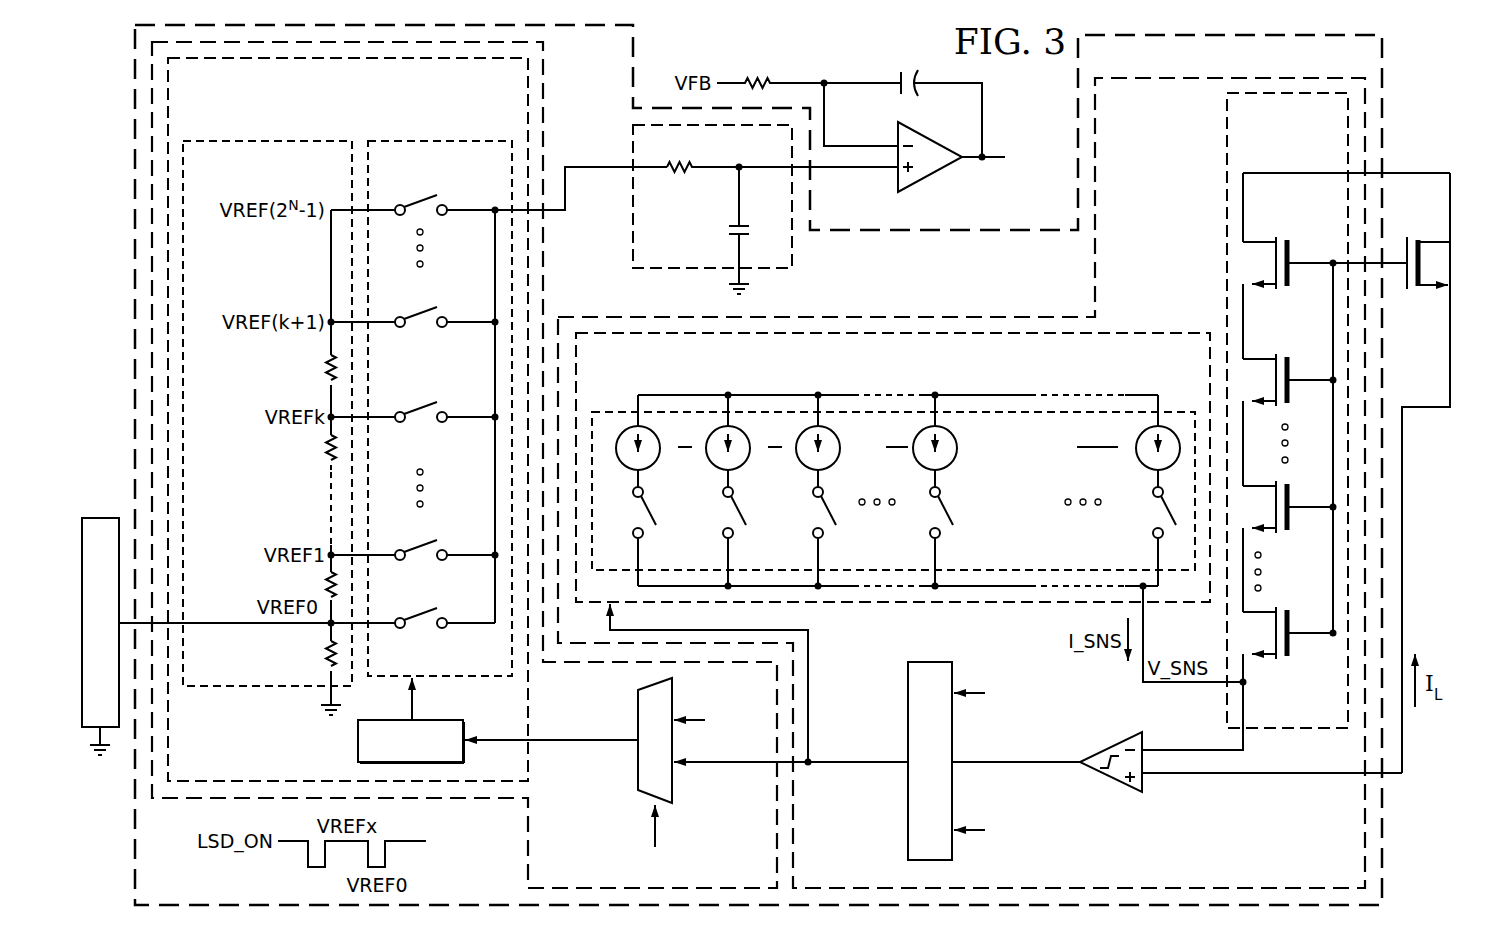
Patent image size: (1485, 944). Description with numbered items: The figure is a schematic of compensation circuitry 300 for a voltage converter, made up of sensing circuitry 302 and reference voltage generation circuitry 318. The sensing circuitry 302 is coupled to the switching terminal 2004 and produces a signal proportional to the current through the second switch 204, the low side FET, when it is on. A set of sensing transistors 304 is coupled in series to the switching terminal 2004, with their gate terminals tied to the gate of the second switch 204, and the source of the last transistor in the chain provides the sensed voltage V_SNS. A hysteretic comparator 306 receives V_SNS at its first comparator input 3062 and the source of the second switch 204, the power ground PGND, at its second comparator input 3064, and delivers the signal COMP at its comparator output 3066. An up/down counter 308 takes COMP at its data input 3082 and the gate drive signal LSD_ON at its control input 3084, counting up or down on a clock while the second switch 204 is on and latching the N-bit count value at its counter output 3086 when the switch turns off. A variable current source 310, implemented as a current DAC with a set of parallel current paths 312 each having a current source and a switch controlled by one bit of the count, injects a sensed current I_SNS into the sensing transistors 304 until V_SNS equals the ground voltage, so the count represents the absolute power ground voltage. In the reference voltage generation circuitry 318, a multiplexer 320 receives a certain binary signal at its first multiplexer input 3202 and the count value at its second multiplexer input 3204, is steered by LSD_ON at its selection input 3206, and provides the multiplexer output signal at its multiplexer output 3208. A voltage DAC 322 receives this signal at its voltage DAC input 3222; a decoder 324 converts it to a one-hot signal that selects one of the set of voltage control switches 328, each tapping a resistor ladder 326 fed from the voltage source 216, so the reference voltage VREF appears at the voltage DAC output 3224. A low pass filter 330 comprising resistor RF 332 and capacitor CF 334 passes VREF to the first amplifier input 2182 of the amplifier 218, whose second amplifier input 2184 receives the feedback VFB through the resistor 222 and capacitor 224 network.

The compensation circuitry 300 is at (1386, 92).
The sensing circuitry 302 is at (992, 314).
The set of sensing transistors 304 is at (1225, 122).
The second switch 204 is at (1405, 246).
The switching terminal 2004 is at (1410, 172).
The comparator 306 is at (1113, 746).
The first comparator input 3062 is at (1148, 749).
The second comparator input 3064 is at (1147, 786).
The comparator output 3066 is at (1076, 768).
The up/down counter 308 is at (906, 712).
The data input 3082 is at (957, 756).
The control input 3084 is at (957, 842).
The counter output 3086 is at (904, 772).
The variable current source 310 is at (1134, 331).
The set of parallel current paths 312 is at (621, 410).
The reference voltage generation circuitry 318 is at (548, 91).
The multiplexer 320 is at (638, 711).
The first multiplexer input 3202 is at (679, 718).
The second multiplexer input 3204 is at (679, 773).
The selection input 3206 is at (650, 819).
The multiplexer output 3208 is at (637, 752).
The voltage DAC 322 is at (348, 419).
The voltage DAC input 3222 is at (470, 734).
The voltage DAC output 3224 is at (604, 166).
The decoder 324 is at (358, 752).
The resistor ladder 326 is at (234, 140).
The set of voltage control switches 328 is at (460, 140).
The low pass filter 330 is at (631, 239).
The resistor RF 332 is at (680, 178).
The capacitor CF 334 is at (728, 236).
The voltage source 216 is at (109, 517).
The amplifier 218 is at (927, 179).
The first amplifier input 2182 is at (892, 178).
The second amplifier input 2184 is at (892, 136).
The resistor 222 is at (761, 78).
The capacitor 224 is at (907, 76).